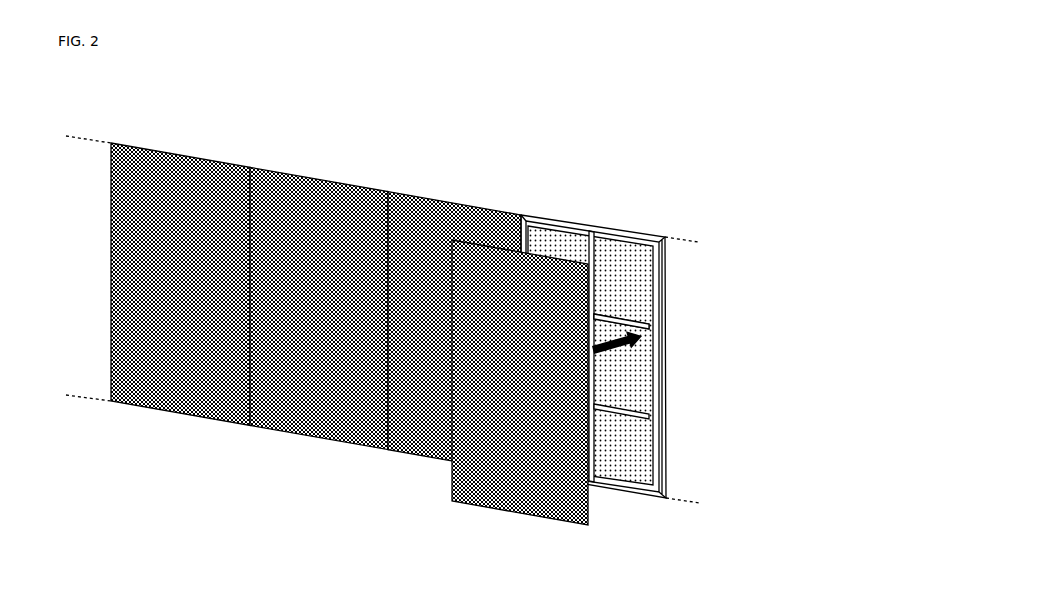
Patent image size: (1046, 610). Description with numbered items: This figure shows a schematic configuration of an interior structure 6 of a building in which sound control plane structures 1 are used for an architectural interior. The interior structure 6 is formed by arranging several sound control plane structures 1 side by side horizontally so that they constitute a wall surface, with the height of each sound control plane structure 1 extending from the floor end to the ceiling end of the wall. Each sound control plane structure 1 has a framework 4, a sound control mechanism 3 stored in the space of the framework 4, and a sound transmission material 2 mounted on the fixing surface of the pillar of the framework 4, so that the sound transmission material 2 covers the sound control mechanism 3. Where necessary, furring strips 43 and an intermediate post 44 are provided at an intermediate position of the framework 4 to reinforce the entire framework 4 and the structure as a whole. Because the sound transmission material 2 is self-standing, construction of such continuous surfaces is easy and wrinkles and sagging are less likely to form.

The sound control plane structure 1 is at (185, 142).
The sound transmission material 2 is at (452, 480).
The sound control mechanism 3 is at (630, 305).
The framework 4 is at (657, 268).
The interior structure 6 is at (413, 97).
The furring strips 43 is at (631, 330).
The intermediate post 44 is at (584, 222).